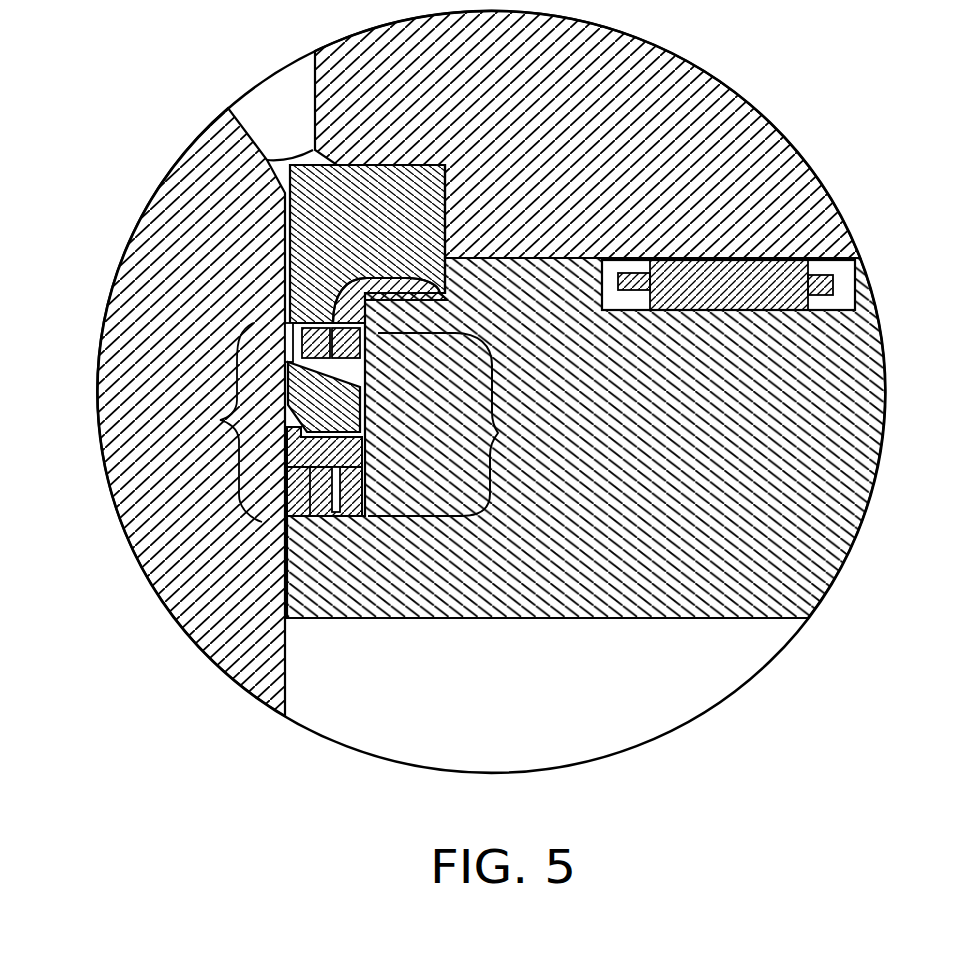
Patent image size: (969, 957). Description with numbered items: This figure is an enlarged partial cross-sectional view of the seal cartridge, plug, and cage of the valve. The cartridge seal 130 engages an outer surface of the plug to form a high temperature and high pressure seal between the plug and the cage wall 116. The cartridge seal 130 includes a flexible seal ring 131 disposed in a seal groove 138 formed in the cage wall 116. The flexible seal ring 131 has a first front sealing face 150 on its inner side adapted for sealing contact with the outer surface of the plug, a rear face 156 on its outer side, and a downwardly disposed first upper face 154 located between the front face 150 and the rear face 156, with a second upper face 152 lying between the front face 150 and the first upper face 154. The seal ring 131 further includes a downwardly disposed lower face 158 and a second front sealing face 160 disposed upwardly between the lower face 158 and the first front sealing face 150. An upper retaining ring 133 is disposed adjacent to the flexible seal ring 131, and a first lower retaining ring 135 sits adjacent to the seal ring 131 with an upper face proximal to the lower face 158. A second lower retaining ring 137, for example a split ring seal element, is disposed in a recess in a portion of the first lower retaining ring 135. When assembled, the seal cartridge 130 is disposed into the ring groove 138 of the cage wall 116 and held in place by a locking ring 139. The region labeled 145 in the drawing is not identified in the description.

The cage wall 116 is at (678, 468).
The cartridge seal 130 is at (220, 420).
The flexible seal ring 131 is at (368, 432).
The upper retaining ring 133 is at (372, 372).
The first lower retaining ring 135 is at (374, 470).
The second lower retaining ring 137 is at (290, 517).
The seal groove 138 is at (498, 433).
The locking ring 139 is at (408, 238).
The sleeve 145 is at (250, 610).
The first front sealing face 150 is at (287, 368).
The second upper face 152 is at (285, 323).
The first upper face 154 is at (447, 300).
The rear face 156 is at (366, 398).
The lower face 158 is at (280, 468).
The second front sealing face 160 is at (265, 446).